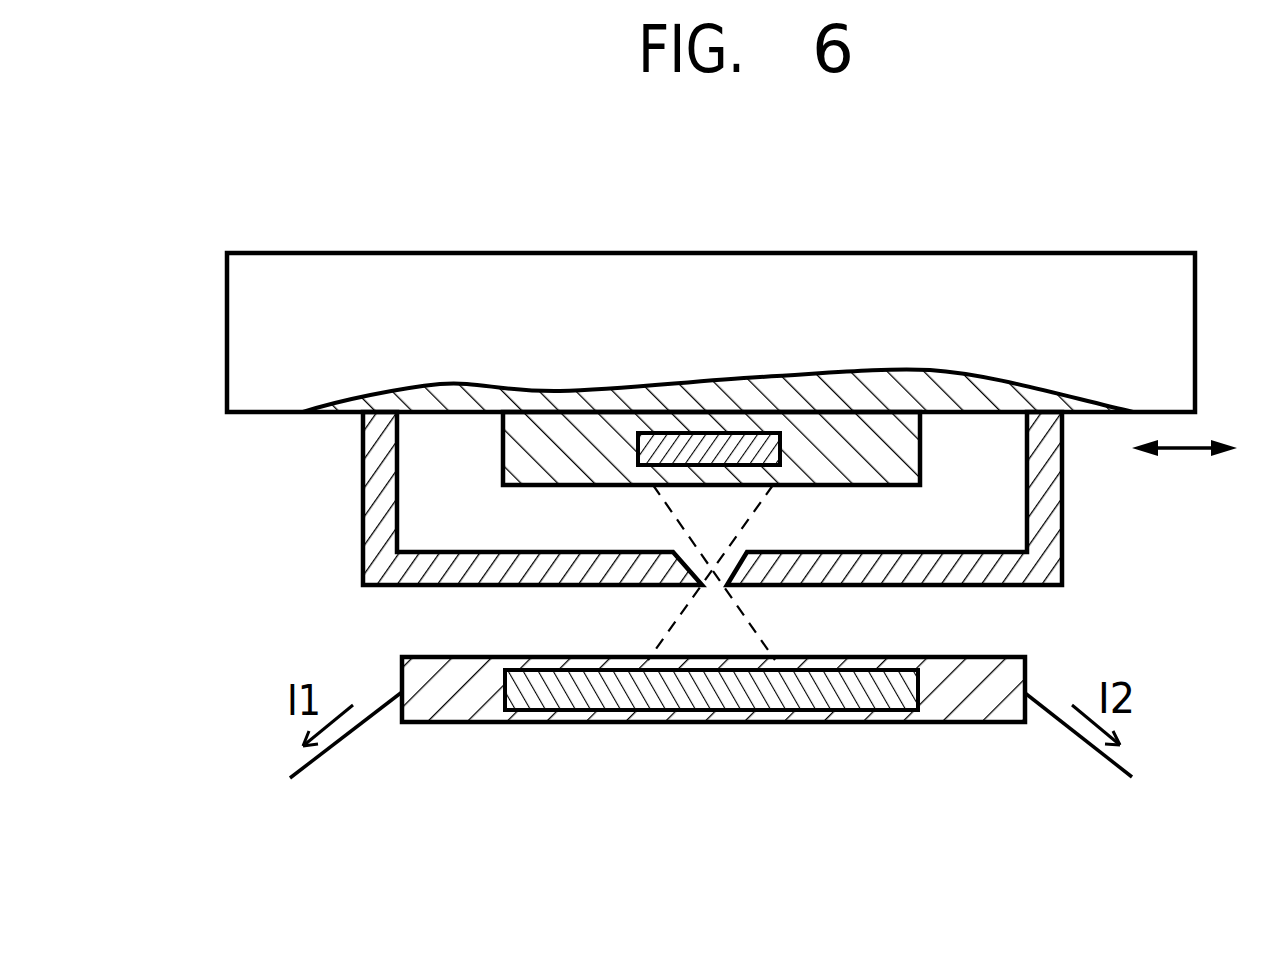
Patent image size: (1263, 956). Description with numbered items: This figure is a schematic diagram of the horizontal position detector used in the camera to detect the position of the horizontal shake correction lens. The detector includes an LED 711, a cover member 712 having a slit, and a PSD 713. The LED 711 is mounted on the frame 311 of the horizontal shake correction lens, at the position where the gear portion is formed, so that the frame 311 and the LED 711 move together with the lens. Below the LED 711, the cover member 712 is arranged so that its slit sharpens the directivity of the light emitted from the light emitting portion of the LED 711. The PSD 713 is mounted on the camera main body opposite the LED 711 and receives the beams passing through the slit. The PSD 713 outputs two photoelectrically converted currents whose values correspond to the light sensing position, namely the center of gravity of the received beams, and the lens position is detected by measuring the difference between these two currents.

The frame 311 is at (705, 252).
The LED 711 is at (778, 488).
The cover member 712 is at (1020, 588).
The PSD 713 is at (932, 725).